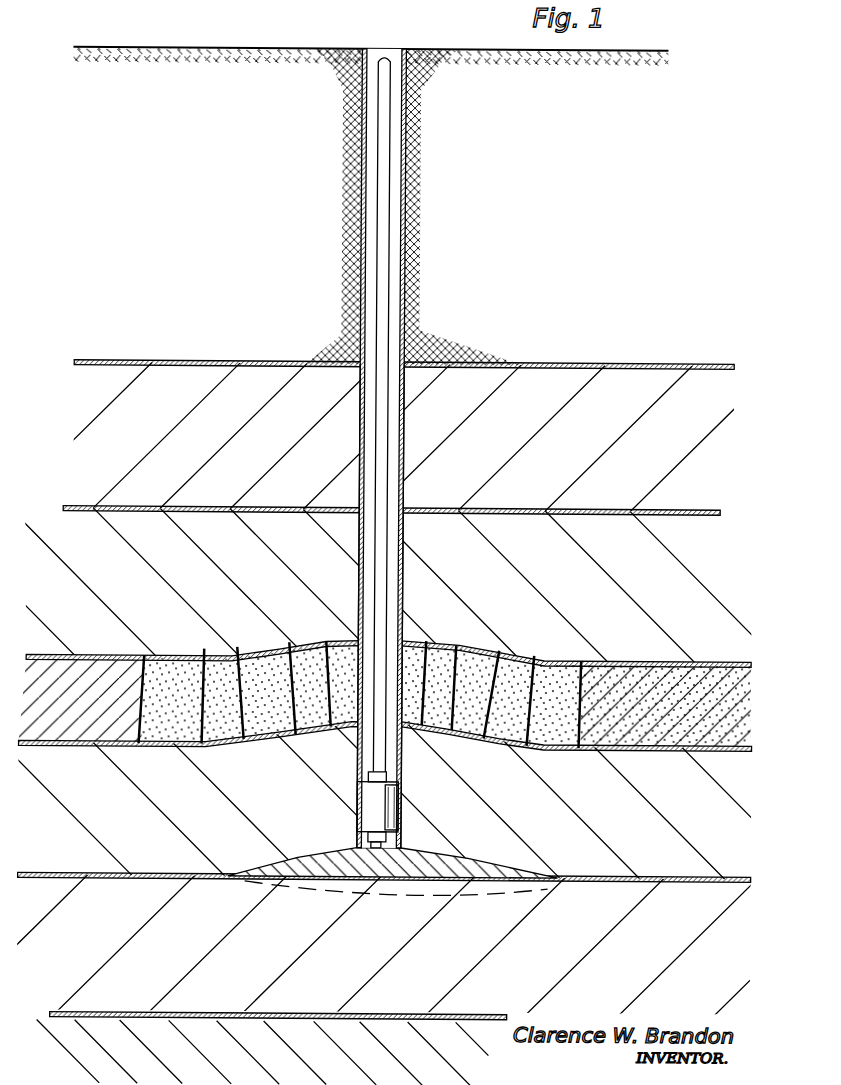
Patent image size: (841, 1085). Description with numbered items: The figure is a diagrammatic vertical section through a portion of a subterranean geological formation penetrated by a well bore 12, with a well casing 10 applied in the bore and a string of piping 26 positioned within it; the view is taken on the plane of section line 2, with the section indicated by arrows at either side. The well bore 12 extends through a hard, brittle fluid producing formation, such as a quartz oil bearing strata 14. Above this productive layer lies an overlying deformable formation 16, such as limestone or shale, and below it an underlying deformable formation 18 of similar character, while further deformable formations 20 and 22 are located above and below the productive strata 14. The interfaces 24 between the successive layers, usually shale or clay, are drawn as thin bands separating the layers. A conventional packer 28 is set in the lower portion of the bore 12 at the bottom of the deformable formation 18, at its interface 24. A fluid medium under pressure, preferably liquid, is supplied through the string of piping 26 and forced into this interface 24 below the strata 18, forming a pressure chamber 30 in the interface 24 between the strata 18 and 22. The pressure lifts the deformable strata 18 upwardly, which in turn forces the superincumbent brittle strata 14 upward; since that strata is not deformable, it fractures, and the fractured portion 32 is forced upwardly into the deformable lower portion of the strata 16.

The section line 2- 2 is at (112, 648).
The well casing 10 is at (413, 53).
The well bore 12 is at (401, 772).
The oil bearing strata 14 is at (444, 682).
The overlying deformable formation 16 is at (512, 518).
The underlying deformable formation 18 is at (595, 853).
The deformable formation 20 is at (542, 373).
The deformable formation 22 is at (303, 983).
The interfaces 24 is at (618, 367).
The string of piping 26 is at (382, 440).
The packer 28 is at (401, 821).
The pressure chamber 30 is at (335, 862).
The fractured portion 32 is at (415, 652).